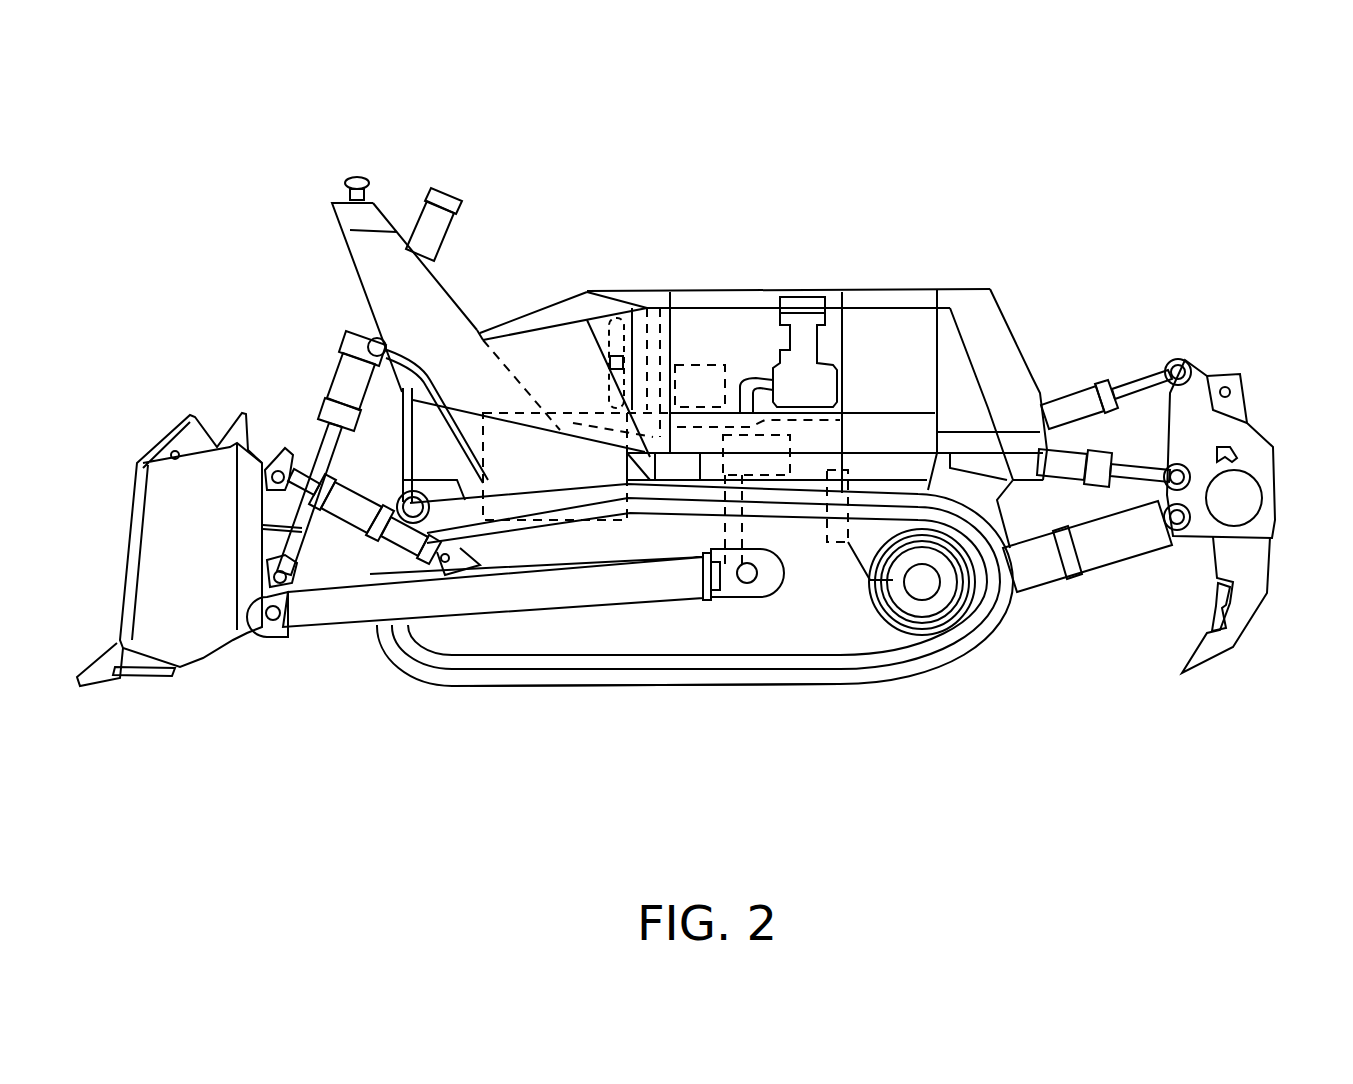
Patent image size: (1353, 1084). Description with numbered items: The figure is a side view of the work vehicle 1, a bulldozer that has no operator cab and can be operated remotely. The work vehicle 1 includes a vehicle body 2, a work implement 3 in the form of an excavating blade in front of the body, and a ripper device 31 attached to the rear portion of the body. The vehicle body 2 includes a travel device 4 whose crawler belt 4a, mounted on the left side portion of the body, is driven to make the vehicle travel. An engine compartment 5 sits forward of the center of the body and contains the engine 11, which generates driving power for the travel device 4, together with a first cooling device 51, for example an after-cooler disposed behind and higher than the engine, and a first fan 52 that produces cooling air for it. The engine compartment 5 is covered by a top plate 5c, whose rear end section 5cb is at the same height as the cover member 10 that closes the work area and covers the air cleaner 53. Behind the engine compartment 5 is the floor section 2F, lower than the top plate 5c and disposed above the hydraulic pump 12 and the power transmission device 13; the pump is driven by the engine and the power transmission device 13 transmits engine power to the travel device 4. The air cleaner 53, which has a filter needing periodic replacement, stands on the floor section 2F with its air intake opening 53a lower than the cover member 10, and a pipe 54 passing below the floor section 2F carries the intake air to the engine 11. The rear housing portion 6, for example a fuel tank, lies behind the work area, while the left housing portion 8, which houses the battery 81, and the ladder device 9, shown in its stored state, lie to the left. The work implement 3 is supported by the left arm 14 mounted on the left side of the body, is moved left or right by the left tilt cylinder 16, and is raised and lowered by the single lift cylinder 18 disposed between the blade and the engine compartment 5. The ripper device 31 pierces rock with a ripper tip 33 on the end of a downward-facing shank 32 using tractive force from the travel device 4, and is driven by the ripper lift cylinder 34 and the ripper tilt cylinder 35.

The work vehicle 1 is at (1163, 194).
The vehicle body 2 is at (986, 249).
The floor section 2F is at (917, 410).
The work implement 3 is at (161, 381).
The travel device 4 is at (968, 678).
The crawler belt 4a is at (703, 680).
The engine compartment 5 is at (533, 311).
The top plate 5c is at (490, 322).
The rear end section 5cb is at (608, 290).
The rear housing portion 6 is at (992, 324).
The left housing portion 8 is at (767, 282).
The ladder device 9 is at (877, 290).
The cover member 10 is at (727, 290).
The engine 11 is at (603, 530).
The hydraulic pump 12 is at (762, 480).
The power transmission device 13 is at (803, 550).
The left arm 14 is at (500, 593).
The left tilt cylinder 16 is at (350, 513).
The lift cylinder 18 is at (442, 233).
The ripper device 31 is at (1124, 349).
The shank 32 is at (1247, 603).
The ripper tip 33 is at (1200, 657).
The ripper lift cylinder 34 is at (1072, 467).
The ripper tilt cylinder 35 is at (1080, 423).
The first cooling device 51 is at (628, 290).
The first fan 52 is at (590, 290).
The air cleaner 53 is at (817, 290).
The air intake opening 53a is at (860, 290).
The pipe 54 is at (662, 290).
The battery 81 is at (690, 290).